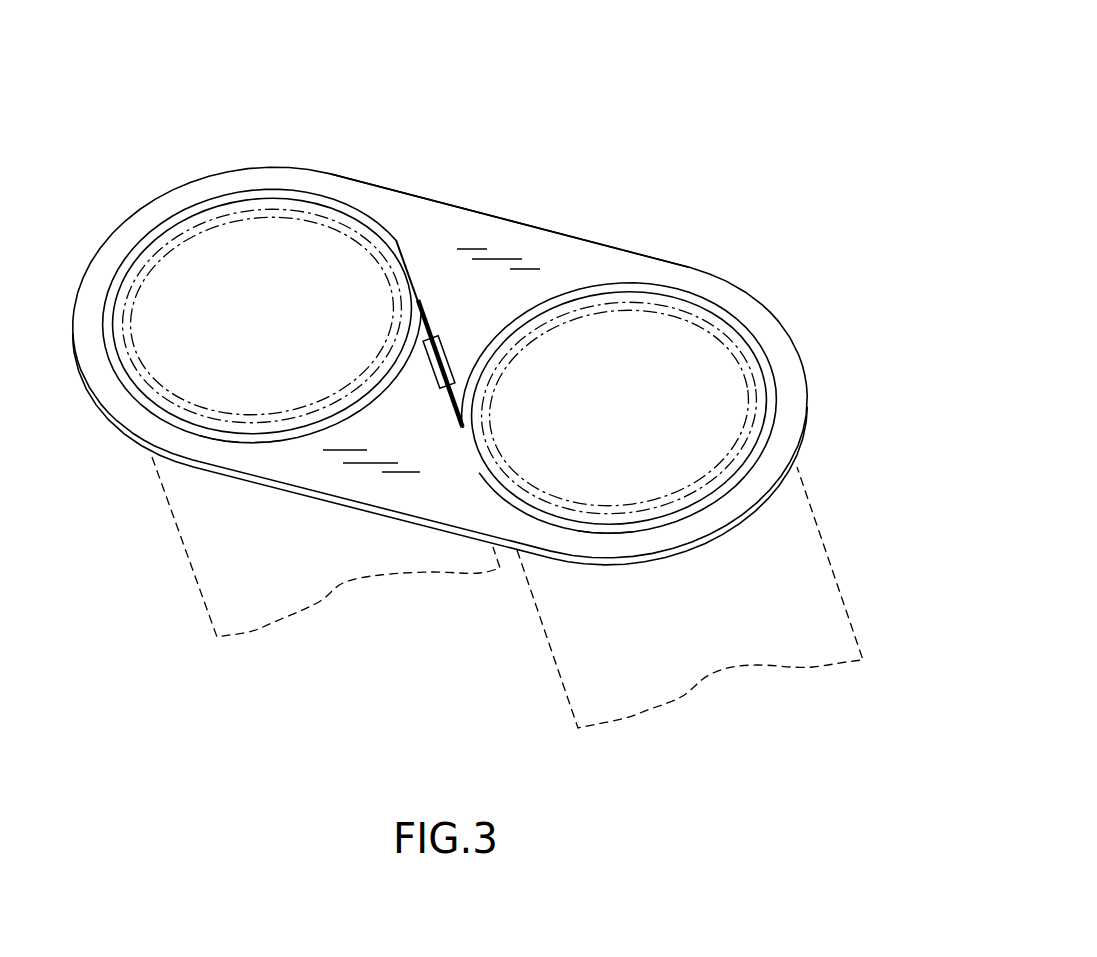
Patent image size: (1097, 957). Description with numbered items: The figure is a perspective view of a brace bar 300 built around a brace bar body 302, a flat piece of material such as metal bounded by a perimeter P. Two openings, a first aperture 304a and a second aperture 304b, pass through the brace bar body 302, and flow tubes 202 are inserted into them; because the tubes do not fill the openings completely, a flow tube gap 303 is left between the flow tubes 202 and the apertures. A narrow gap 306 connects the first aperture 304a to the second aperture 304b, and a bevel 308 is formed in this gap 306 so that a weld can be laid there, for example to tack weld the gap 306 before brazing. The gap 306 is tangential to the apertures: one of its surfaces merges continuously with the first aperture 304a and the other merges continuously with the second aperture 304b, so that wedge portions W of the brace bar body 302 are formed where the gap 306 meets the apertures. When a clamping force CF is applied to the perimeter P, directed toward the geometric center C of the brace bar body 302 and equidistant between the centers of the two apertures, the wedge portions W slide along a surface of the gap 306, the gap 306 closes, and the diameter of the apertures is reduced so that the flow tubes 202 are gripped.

The brace bar 300 is at (677, 75).
The perimeter P is at (192, 183).
The brace bar body 302 is at (425, 213).
The first aperture 304a is at (110, 283).
The second aperture 304b is at (757, 337).
The flow tubes 202 is at (177, 417).
The flow tube gap 303 is at (222, 440).
The gap 306 is at (453, 400).
The bevel 308 is at (438, 340).
The geometric center C is at (435, 365).
The wedge portions W is at (420, 333).
The clamping force CF is at (522, 211).